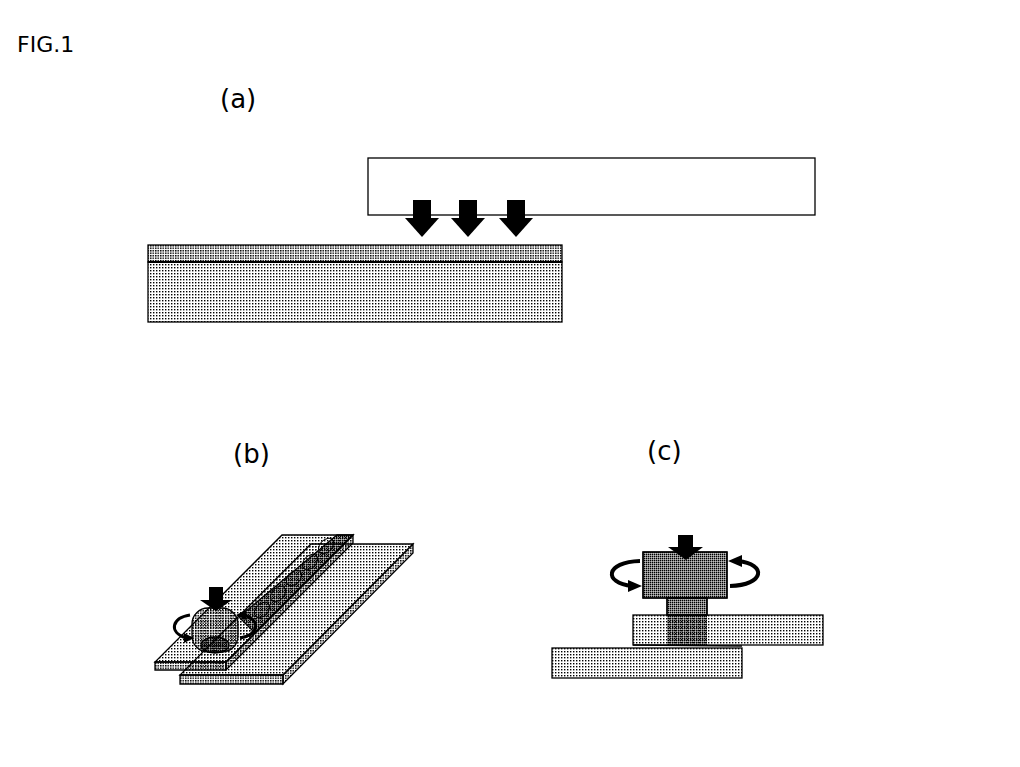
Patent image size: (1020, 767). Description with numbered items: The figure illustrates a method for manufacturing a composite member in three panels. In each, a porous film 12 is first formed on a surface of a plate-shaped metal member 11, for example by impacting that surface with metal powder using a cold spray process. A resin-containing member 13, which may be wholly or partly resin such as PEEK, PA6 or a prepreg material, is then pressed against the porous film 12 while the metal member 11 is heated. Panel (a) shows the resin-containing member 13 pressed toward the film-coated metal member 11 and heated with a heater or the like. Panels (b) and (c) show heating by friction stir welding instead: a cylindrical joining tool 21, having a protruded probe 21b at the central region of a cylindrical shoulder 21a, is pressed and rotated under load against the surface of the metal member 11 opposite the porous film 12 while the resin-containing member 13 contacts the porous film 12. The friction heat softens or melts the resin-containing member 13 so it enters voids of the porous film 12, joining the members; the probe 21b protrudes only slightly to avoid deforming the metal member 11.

The metal member 11 is at (157, 293).
The porous film 12 is at (150, 257).
The resin-containing member 13 is at (800, 180).
The joining tool 21 is at (205, 605).
The cylindrical shoulder 21a is at (657, 565).
The protruded probe 21b is at (667, 608).